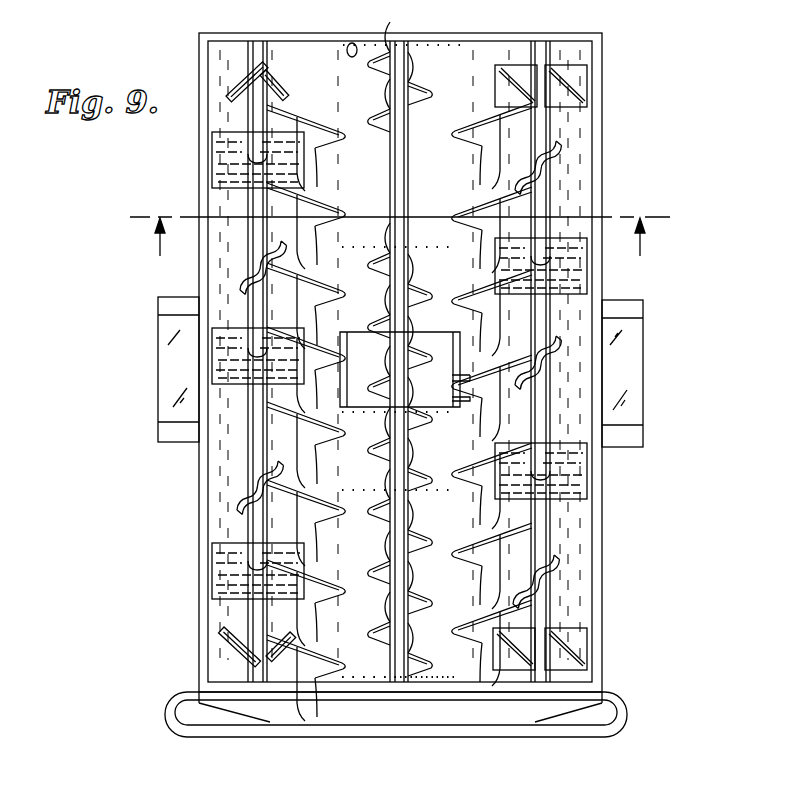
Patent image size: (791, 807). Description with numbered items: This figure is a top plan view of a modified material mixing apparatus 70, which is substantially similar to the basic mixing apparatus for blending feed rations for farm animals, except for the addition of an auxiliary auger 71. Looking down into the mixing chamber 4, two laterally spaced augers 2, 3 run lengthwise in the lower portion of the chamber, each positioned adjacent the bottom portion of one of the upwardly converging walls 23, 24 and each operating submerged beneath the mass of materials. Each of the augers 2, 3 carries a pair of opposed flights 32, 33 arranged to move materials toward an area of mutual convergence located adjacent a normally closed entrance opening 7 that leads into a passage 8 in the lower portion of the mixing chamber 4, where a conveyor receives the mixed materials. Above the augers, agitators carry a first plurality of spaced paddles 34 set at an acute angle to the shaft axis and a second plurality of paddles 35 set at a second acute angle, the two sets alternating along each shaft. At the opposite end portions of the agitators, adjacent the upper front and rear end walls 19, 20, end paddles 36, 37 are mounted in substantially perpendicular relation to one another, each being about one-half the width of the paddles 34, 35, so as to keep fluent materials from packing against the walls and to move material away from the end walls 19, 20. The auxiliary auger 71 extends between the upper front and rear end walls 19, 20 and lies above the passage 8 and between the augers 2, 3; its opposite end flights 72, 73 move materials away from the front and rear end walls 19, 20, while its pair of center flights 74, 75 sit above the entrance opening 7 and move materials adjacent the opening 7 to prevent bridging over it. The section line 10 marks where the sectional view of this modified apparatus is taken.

The auger 2 is at (320, 550).
The auger 3 is at (487, 594).
The mixing chamber 4 is at (455, 70).
The entrance opening 7 is at (366, 346).
The passage 8 is at (446, 342).
The section line 10- 10 is at (400, 220).
The upper front end wall 19 is at (350, 44).
The upper rear end wall 20 is at (332, 676).
The upwardly converging wall 23 is at (386, 684).
The upwardly converging wall 24 is at (446, 684).
The flight 32 is at (336, 132).
The flight 33 is at (336, 503).
The first plurality of paddles 34 is at (222, 150).
The second plurality of paddles 35 is at (570, 138).
The end paddle 36 is at (240, 85).
The end paddle 37 is at (580, 654).
The modified material mixing apparatus 70 is at (612, 42).
The auxiliary auger 71 is at (410, 138).
The end flight 72 is at (412, 88).
The end flight 73 is at (380, 640).
The center flight 74 is at (410, 285).
The center flight 75 is at (410, 502).